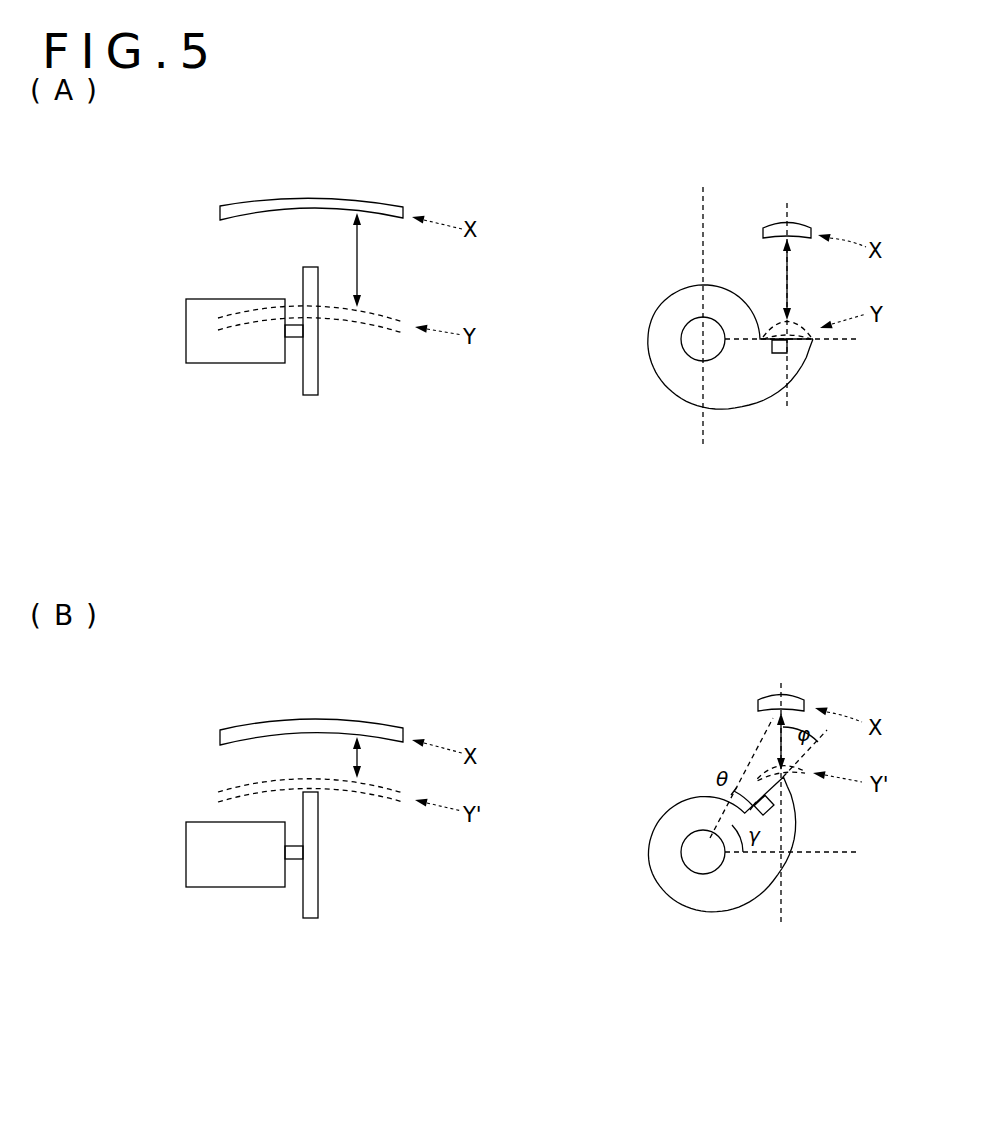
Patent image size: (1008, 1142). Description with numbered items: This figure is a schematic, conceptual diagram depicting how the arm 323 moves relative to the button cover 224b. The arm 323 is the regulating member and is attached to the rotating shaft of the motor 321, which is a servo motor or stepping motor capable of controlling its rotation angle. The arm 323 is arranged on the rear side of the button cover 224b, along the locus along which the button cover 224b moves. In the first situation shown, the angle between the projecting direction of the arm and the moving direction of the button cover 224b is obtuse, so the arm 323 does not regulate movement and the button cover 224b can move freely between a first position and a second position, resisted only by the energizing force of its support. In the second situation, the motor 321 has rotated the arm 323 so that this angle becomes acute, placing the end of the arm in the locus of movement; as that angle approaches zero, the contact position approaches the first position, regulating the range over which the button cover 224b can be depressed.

The button cover 224b is at (385, 203).
The motor 321 is at (213, 363).
The arm 323 is at (310, 405).